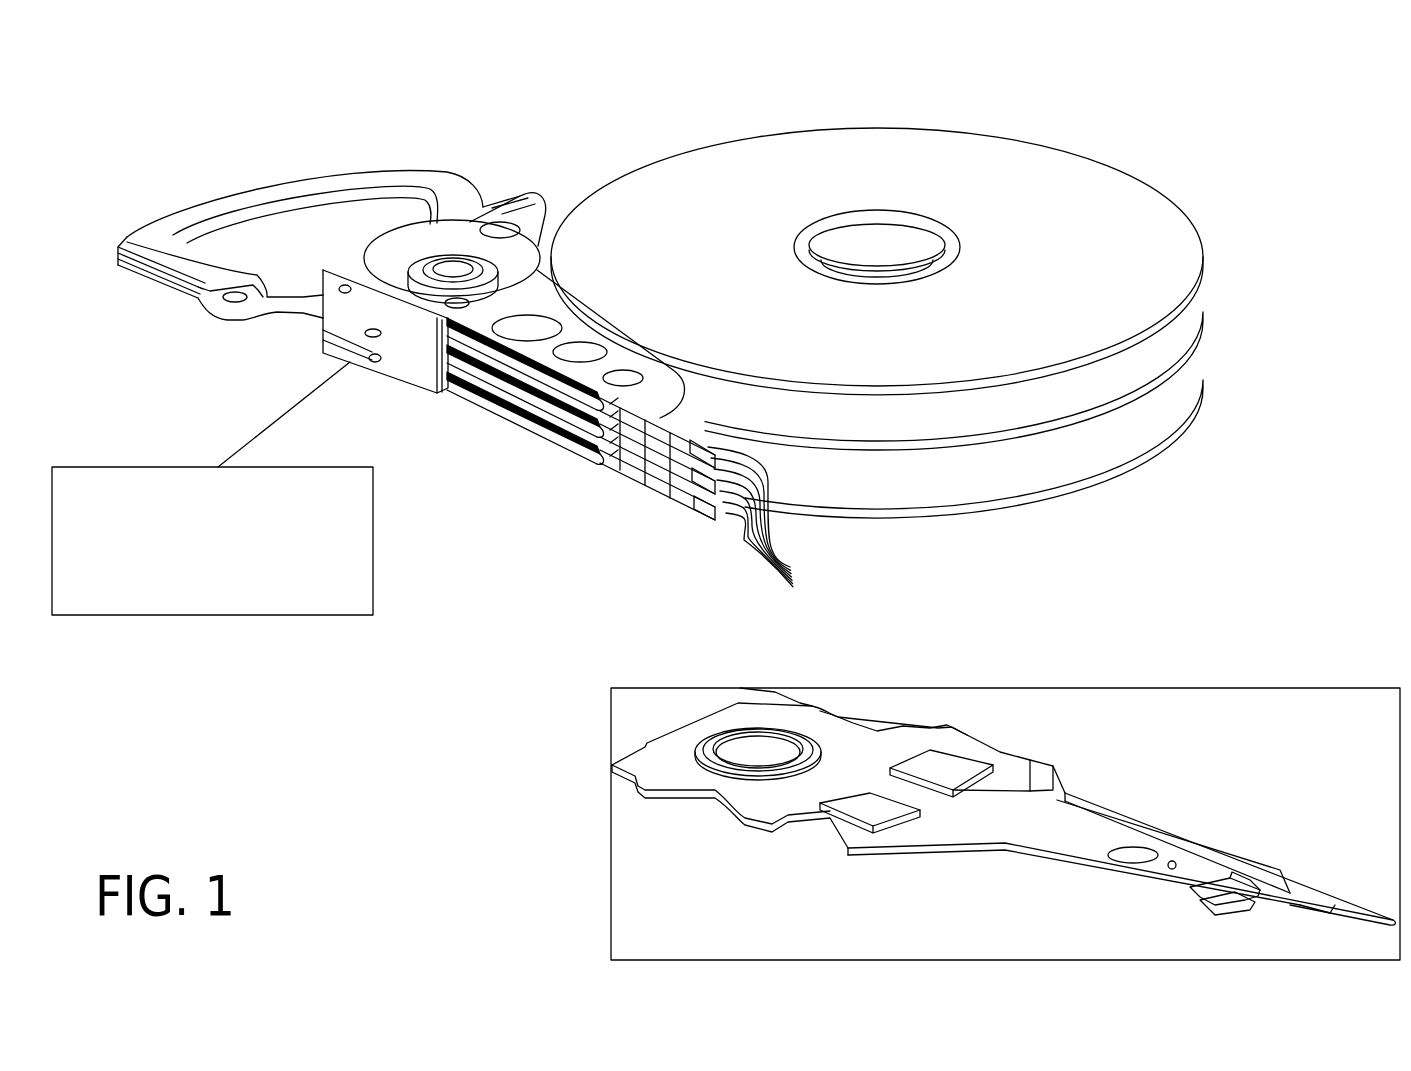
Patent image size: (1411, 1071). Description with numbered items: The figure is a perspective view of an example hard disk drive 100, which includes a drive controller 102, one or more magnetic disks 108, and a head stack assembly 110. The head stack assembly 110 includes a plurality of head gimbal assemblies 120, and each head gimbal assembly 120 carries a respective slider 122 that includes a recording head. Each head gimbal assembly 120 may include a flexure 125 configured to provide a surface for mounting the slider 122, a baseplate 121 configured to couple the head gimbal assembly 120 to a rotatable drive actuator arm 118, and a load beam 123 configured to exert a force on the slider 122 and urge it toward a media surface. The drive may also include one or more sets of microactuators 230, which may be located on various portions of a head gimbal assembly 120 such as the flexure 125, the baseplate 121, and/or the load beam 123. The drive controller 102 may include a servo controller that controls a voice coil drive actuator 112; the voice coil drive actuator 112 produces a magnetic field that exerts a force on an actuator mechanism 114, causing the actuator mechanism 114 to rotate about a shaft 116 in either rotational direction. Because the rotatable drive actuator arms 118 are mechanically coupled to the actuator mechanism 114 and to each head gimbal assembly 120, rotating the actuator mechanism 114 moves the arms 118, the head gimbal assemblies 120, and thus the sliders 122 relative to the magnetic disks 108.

The hard disk drive 100 is at (1203, 88).
The drive controller 102 is at (355, 504).
The magnetic disks 108 is at (1028, 140).
The head stack assembly 110 is at (540, 503).
The voice coil drive actuator 112 is at (268, 180).
The actuator mechanism 114 is at (535, 198).
The shaft 116 is at (455, 268).
The rotatable drive actuator arms 118 is at (477, 378).
The head gimbal assembly 120 is at (705, 412).
The baseplate 121 is at (713, 796).
The slider 122 is at (1330, 925).
The load beam 123 is at (1106, 860).
The flexure 125 is at (1198, 890).
The microactuators 230 is at (945, 772).